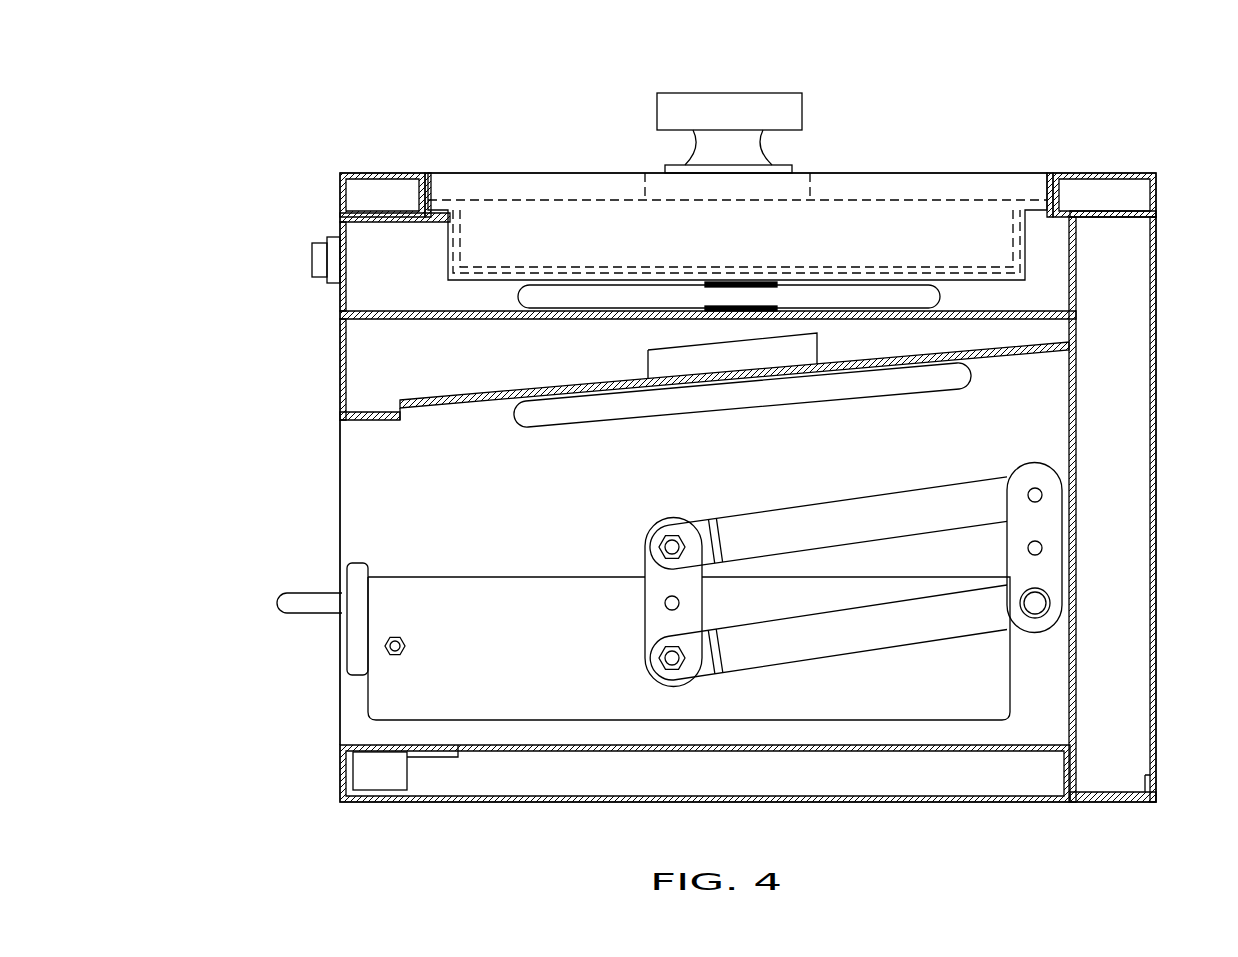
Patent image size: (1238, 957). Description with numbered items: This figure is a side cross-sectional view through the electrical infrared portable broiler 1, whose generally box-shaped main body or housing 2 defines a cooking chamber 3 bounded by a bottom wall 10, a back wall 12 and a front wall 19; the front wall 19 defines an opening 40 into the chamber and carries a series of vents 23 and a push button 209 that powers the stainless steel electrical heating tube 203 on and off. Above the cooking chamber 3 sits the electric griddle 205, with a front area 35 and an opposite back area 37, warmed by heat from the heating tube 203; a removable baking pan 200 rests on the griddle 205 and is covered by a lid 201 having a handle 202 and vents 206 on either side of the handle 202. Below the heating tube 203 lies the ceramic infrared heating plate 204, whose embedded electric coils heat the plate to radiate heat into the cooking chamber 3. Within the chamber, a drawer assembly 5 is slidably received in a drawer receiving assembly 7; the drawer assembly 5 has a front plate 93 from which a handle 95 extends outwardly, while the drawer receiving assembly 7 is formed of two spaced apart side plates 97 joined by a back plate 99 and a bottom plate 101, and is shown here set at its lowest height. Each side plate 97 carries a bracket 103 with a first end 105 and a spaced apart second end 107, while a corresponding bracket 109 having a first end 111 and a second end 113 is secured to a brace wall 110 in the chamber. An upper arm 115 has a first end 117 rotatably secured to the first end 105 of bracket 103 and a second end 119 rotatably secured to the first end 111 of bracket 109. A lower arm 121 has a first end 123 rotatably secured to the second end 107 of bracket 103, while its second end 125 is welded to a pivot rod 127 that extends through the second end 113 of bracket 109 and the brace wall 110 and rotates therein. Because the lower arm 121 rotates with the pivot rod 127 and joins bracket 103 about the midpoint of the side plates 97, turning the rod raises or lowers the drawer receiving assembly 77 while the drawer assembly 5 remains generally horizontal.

The electrical infrared portable broiler 1 is at (188, 170).
The main body or housing 2 is at (232, 122).
The cooking chamber 3 is at (375, 450).
The drawer assembly 5 is at (343, 575).
The drawer receiving assembly 7 is at (410, 575).
The bottom wall 10 is at (345, 775).
The back wall 12 is at (1062, 425).
The front wall 19 is at (335, 220).
The vents 23 is at (345, 382).
The front area 35 is at (383, 172).
The back area 37 is at (1100, 172).
The opening 40 is at (352, 490).
The drawer receiving assembly 77 is at (363, 688).
The front plate 93 is at (345, 655).
The handle 95 is at (275, 605).
The side plates 97 is at (525, 600).
The back plate 99 is at (1077, 698).
The bottom plate 101 is at (545, 720).
The bracket 103 is at (640, 630).
The first end 105 is at (670, 532).
The second end 107 is at (655, 668).
The bracket 109 is at (1070, 550).
The brace walls 110 is at (505, 474).
The first end 111 is at (1058, 478).
The second end 113 is at (1050, 632).
The upper arm 115 is at (838, 487).
The first end 117 is at (686, 540).
The second end 119 is at (1000, 487).
The lower arm 121 is at (780, 672).
The first end 123 is at (655, 648).
The second end 125 is at (985, 620).
The pivot rod 127 is at (1050, 606).
The removable baking pan 200 is at (810, 265).
The lid 201 is at (918, 172).
The handle 202 is at (760, 93).
The electrical heating tube 203 is at (905, 295).
The infrared heating plate 204 is at (975, 372).
The electric griddle 205 is at (497, 281).
The vents 206 is at (652, 185).
The push button 209 is at (312, 260).